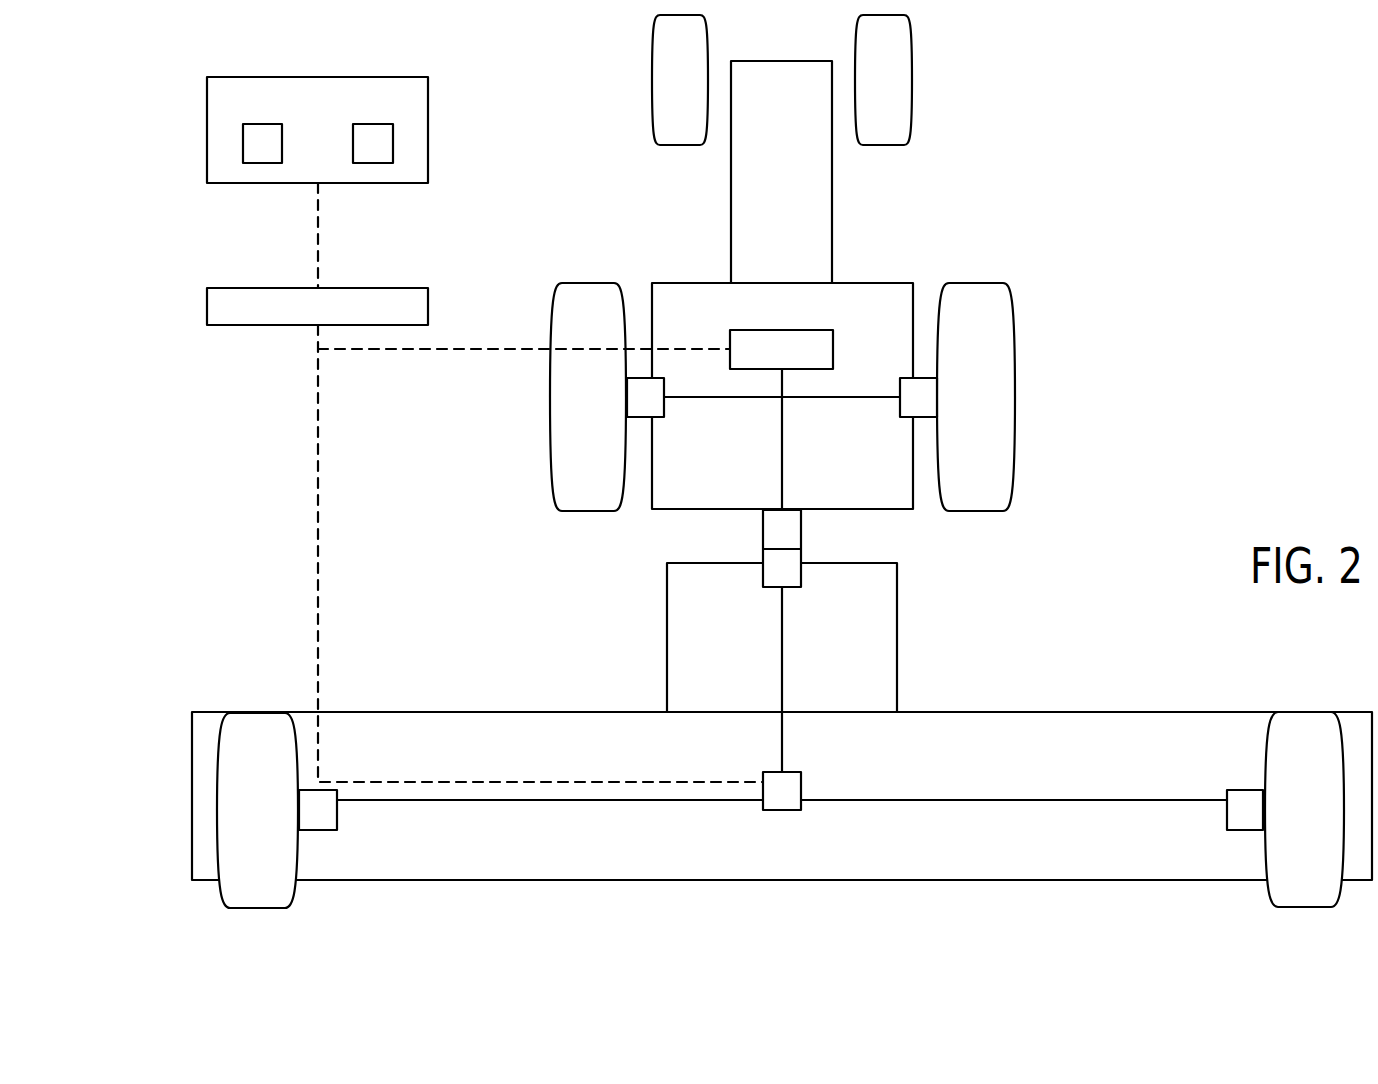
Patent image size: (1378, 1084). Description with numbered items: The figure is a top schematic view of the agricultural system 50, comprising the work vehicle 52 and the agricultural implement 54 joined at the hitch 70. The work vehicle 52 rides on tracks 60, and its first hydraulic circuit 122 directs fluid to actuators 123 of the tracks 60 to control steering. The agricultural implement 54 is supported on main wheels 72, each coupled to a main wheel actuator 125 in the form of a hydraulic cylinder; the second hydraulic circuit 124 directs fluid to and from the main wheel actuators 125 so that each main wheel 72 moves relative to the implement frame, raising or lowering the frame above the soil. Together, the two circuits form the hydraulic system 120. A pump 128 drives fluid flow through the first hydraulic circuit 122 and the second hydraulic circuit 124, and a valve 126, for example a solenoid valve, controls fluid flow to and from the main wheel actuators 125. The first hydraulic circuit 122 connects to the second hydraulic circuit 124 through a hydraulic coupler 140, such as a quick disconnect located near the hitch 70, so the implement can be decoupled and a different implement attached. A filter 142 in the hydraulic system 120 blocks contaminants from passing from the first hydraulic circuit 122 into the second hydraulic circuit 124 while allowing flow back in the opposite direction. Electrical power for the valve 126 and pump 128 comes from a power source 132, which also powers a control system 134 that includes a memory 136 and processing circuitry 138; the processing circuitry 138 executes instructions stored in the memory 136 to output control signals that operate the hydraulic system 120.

The agricultural system 50 is at (1122, 125).
The work vehicle 52 is at (955, 133).
The agricultural implement 54 is at (1142, 678).
The tracks 60 is at (562, 412).
The hitch 70 is at (705, 529).
The main wheel 72 is at (257, 720).
The hydraulic system 120 is at (920, 604).
The first hydraulic circuit 122 is at (790, 496).
The actuators 123 is at (664, 408).
The second hydraulic circuit 124 is at (722, 696).
The main wheel actuators 125 is at (317, 830).
The valve 126 is at (783, 810).
The pump 128 is at (782, 330).
The power source 132 is at (207, 305).
The control system 134 is at (318, 77).
The memory 136 is at (261, 163).
The processing circuitry 138 is at (372, 163).
The hydraulic coupler 140 is at (801, 525).
The filter 142 is at (762, 580).